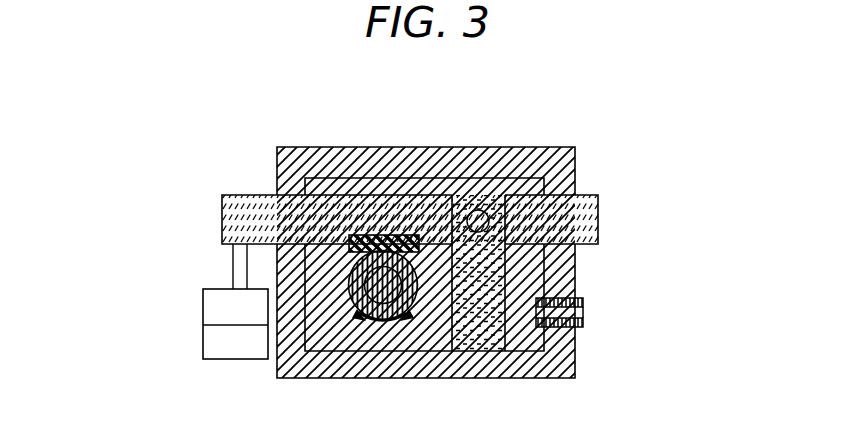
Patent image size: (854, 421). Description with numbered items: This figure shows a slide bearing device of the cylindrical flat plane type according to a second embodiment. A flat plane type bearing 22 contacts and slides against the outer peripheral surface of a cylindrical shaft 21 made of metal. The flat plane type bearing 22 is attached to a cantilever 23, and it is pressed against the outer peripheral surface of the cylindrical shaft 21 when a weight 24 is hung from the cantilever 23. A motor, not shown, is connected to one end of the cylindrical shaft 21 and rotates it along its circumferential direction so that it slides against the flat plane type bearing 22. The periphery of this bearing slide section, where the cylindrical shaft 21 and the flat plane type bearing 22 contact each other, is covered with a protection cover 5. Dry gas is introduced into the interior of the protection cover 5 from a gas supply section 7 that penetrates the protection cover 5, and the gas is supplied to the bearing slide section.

The protection cover 5 is at (548, 150).
The gas supply section 7 is at (585, 314).
The cylindrical shaft 21 is at (417, 283).
The flat plane type bearing 22 is at (393, 235).
The cantilever 23 is at (250, 202).
The weight 24 is at (220, 296).